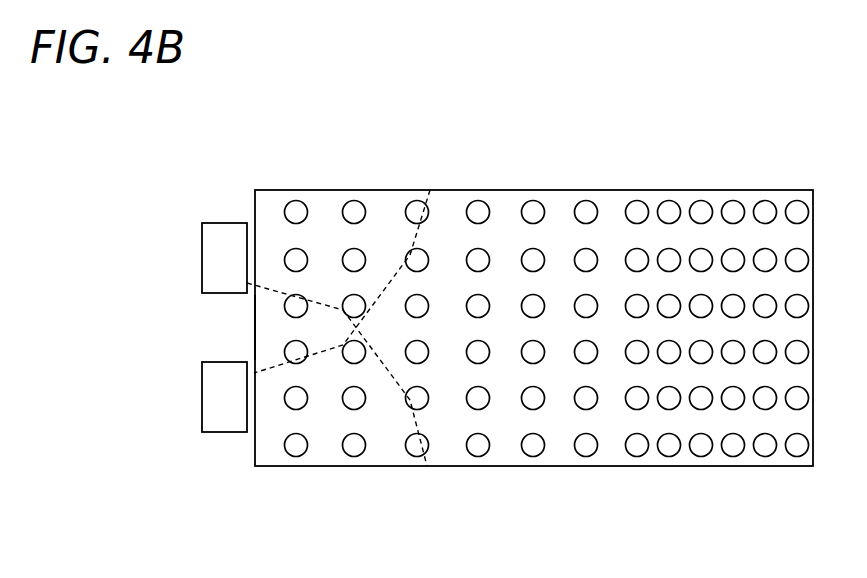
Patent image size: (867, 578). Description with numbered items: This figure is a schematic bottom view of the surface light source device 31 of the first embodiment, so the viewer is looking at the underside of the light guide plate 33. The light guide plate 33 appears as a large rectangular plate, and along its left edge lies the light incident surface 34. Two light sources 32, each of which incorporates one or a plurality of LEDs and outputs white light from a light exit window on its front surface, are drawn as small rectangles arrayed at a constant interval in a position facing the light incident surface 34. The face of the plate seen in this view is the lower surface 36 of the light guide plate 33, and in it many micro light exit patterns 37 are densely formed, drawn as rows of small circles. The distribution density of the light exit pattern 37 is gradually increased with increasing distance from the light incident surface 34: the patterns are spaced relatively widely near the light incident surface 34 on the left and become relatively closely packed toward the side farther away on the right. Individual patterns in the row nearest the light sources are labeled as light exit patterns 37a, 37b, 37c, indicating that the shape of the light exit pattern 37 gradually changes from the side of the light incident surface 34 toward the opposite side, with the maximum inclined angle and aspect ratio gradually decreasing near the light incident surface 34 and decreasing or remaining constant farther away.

The surface light source device 31 is at (750, 123).
The light source 32 is at (220, 258).
The light guide plate 33 is at (613, 292).
The light incident surface 34 is at (255, 331).
The lower surface 36 is at (547, 298).
The light exit pattern 37 is at (588, 402).
The light exit pattern 37a is at (294, 448).
The light exit pattern 37b is at (353, 447).
The light exit pattern 37c is at (414, 449).